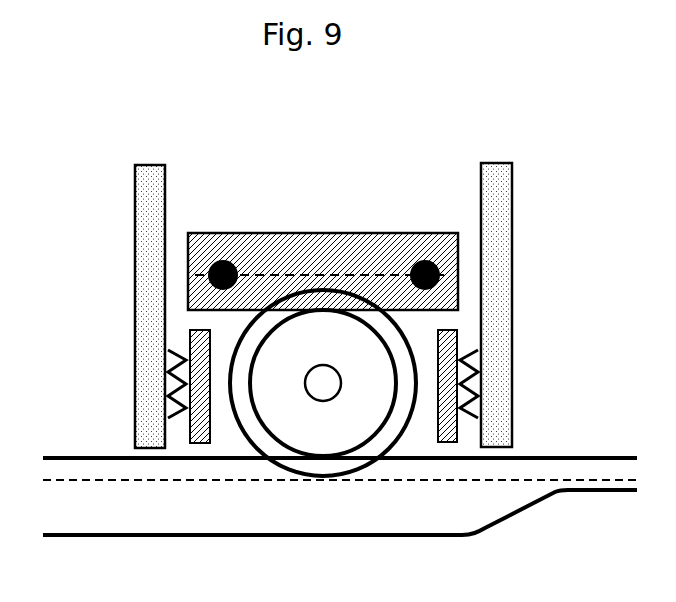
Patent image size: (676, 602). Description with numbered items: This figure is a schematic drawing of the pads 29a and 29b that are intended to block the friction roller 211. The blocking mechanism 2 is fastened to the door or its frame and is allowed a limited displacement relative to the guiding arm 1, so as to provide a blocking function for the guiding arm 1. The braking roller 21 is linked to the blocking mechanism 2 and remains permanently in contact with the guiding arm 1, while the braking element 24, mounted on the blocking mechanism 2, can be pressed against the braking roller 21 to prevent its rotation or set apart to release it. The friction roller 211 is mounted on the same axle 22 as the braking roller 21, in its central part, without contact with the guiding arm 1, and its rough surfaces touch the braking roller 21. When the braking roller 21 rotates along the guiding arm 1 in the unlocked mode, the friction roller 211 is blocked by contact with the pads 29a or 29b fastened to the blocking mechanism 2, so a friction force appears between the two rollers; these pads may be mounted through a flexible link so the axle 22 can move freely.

The guiding arm 1 is at (437, 495).
The blocking mechanism 2 is at (153, 208).
The braking roller 21 is at (363, 360).
The axle 22 is at (327, 387).
The braking element 24 is at (308, 255).
The friction roller 211 is at (243, 336).
The pad 29a is at (190, 342).
The pad 29b is at (458, 338).